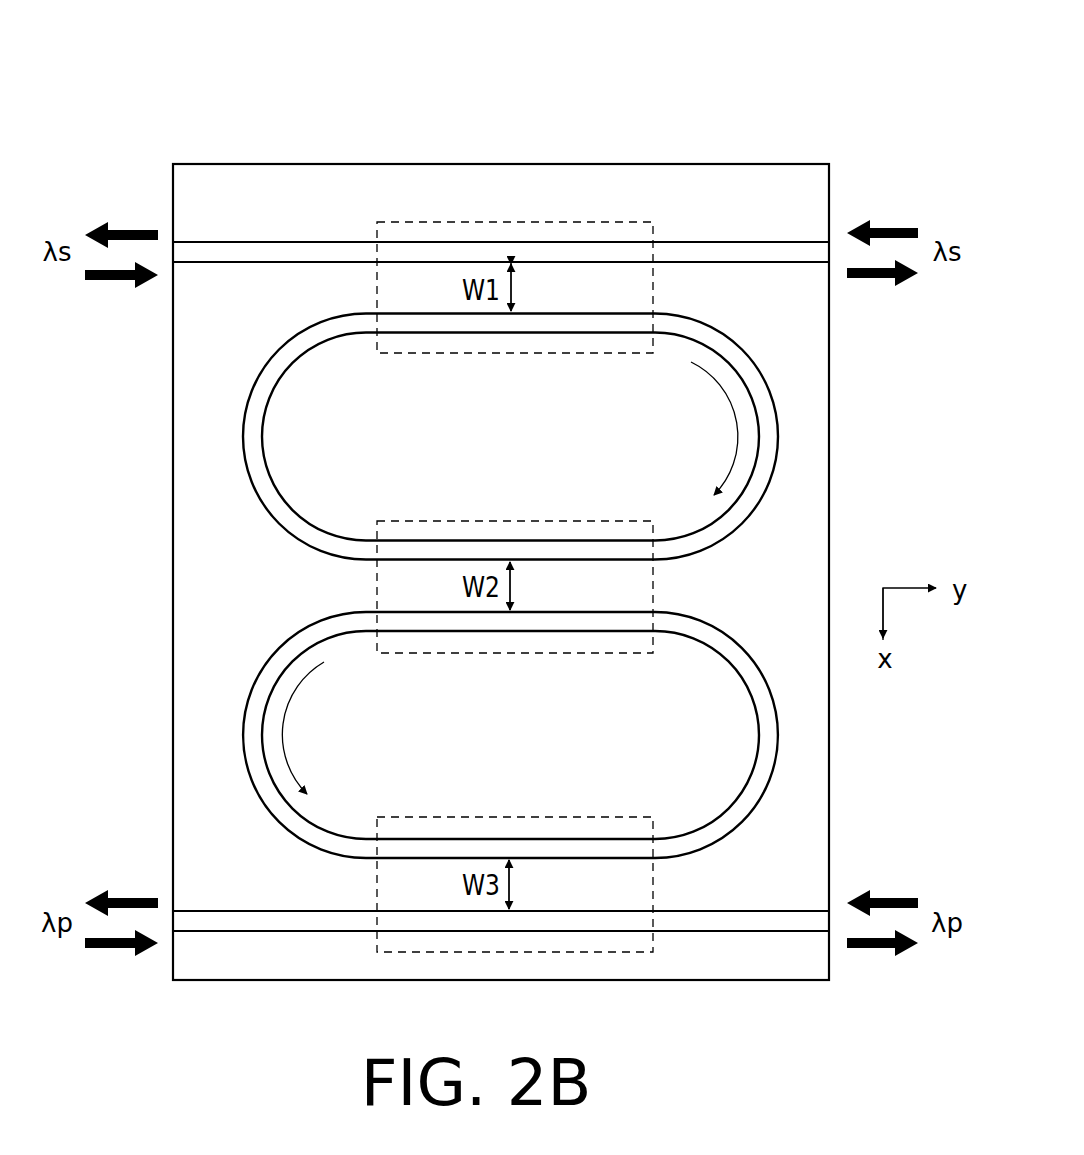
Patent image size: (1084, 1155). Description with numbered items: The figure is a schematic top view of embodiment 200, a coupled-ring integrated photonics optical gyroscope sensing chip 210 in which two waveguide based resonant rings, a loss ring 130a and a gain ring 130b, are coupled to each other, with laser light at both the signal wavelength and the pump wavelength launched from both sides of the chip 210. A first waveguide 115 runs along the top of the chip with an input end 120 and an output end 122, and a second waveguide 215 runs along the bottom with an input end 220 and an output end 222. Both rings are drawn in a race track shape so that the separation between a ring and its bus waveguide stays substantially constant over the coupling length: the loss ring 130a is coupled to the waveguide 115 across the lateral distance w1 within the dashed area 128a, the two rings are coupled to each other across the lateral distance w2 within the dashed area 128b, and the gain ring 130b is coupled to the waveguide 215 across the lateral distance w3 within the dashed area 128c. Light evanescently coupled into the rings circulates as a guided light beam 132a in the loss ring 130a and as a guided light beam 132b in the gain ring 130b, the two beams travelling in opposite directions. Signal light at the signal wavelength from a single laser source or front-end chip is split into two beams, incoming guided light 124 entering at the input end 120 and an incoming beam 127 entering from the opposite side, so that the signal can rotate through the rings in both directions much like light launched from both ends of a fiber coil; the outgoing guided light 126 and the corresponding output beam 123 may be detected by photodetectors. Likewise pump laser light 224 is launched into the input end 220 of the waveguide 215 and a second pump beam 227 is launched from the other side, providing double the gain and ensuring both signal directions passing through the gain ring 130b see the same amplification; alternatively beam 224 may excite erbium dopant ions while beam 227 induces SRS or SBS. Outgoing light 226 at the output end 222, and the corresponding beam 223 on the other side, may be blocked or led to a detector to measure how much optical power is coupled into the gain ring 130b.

The embodiment 200 is at (838, 56).
The coupled-ring integrated photonics optical gyroscope sensing chip 210 is at (686, 163).
The waveguide 115 is at (284, 242).
The input end 120 is at (198, 242).
The output end 122 is at (806, 242).
The signal light output (left) 123 is at (125, 226).
The incoming guided light 124 is at (122, 284).
The outgoing guided light 126 is at (877, 284).
The incoming guided light beam 127 is at (886, 226).
The dashed area 128a is at (540, 222).
The dashed area 128b is at (538, 521).
The dashed area 128c is at (538, 817).
The loss ring 130a is at (700, 558).
The gain ring 130b is at (325, 612).
The guided light beam 132a is at (735, 437).
The guided light beam 132b is at (285, 740).
The waveguide 215 is at (283, 911).
The input end 220 is at (197, 911).
The output end 222 is at (806, 911).
The pump light output (left) 223 is at (125, 895).
The pump laser light 224 is at (122, 952).
The outgoing light 226 is at (877, 952).
The pump beam 227 is at (886, 895).